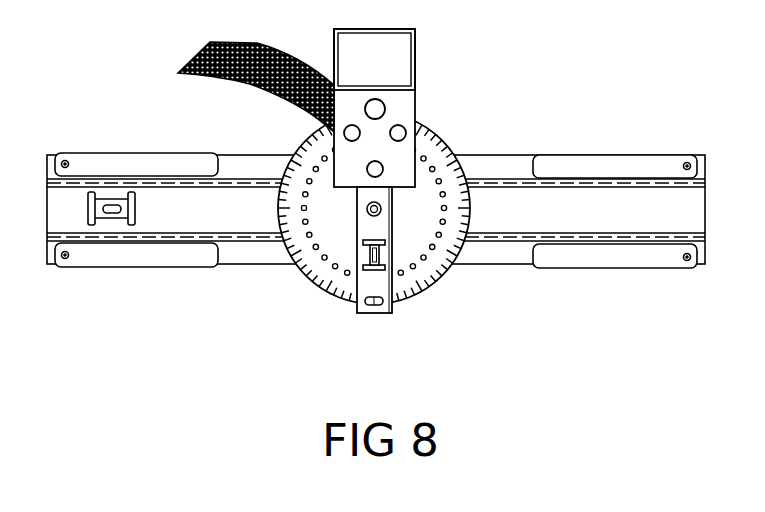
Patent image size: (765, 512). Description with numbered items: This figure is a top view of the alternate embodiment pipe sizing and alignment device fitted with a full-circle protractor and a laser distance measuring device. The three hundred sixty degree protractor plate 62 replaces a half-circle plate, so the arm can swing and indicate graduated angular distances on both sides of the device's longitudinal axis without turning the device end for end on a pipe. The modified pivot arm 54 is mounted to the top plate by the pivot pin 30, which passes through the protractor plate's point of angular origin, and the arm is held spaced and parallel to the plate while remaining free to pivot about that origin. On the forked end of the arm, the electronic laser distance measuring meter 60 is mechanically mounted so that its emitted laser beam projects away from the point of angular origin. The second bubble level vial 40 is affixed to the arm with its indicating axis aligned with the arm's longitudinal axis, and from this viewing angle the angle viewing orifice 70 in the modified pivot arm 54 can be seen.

The electronic laser distance measuring meter 60 is at (415, 60).
The pivot pin 30 is at (381, 209).
The modified pivot arm 54 is at (392, 227).
The angle viewing orifice 70 is at (383, 301).
The second bubble level vial 40 is at (365, 257).
The 360 degree protractor plate 62 is at (317, 290).